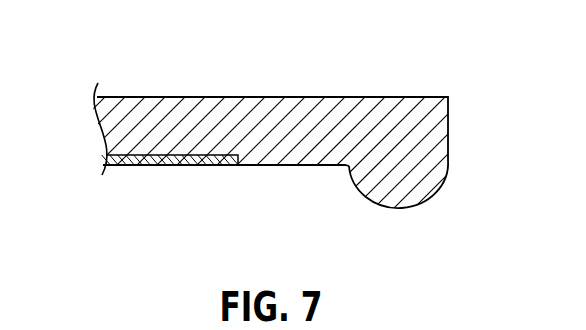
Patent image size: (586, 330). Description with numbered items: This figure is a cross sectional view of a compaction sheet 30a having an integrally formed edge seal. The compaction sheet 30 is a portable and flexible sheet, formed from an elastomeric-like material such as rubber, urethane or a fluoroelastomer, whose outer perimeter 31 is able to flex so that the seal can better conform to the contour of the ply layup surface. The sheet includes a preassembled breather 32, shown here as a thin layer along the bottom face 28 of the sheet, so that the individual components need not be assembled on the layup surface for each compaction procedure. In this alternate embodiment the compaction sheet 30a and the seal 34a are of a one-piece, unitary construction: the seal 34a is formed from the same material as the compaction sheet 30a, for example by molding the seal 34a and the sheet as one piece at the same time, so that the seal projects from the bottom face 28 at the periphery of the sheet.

The bottom face 28 is at (338, 178).
The compaction sheet 30 is at (298, 134).
The compaction sheet 30a is at (163, 180).
The outer perimeter 31 is at (390, 78).
The breather 32 is at (222, 162).
The seal 34a is at (447, 210).